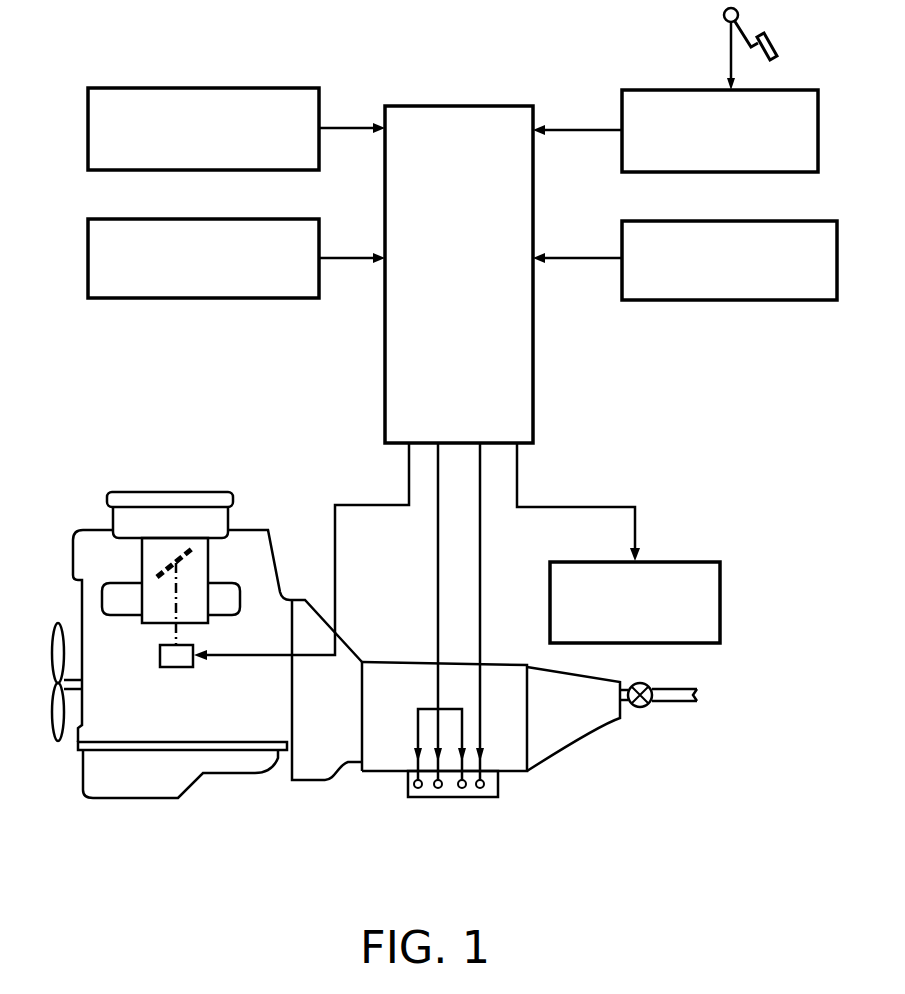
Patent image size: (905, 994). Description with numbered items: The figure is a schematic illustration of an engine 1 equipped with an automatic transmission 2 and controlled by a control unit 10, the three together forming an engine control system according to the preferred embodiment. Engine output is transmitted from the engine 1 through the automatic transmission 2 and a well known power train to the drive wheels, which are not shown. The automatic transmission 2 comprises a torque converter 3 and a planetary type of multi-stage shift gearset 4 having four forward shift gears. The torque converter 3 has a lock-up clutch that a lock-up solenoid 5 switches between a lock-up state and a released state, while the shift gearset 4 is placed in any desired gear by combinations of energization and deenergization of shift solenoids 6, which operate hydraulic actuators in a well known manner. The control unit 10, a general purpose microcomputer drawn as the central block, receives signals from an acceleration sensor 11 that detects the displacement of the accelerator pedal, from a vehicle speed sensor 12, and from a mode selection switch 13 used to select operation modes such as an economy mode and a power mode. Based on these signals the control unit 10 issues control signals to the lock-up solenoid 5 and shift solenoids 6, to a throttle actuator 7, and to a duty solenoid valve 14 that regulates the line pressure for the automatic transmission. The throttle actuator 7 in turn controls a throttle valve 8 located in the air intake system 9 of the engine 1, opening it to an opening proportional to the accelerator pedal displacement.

The engine 1 is at (120, 735).
The automatic transmission 2 is at (495, 675).
The torque converter 3 is at (315, 772).
The shift gearset 4 is at (395, 757).
The lock-up solenoid 5 is at (483, 797).
The shift solenoids 6 is at (418, 797).
The throttle actuator 7 is at (175, 667).
The throttle valve 8 is at (157, 577).
The air intake system 9 is at (252, 510).
The control unit 10 is at (468, 317).
The acceleration sensor 11 is at (648, 90).
The vehicle speed sensor 12 is at (728, 300).
The mode selection switch 13 is at (200, 88).
The duty solenoid valve 14 is at (684, 562).